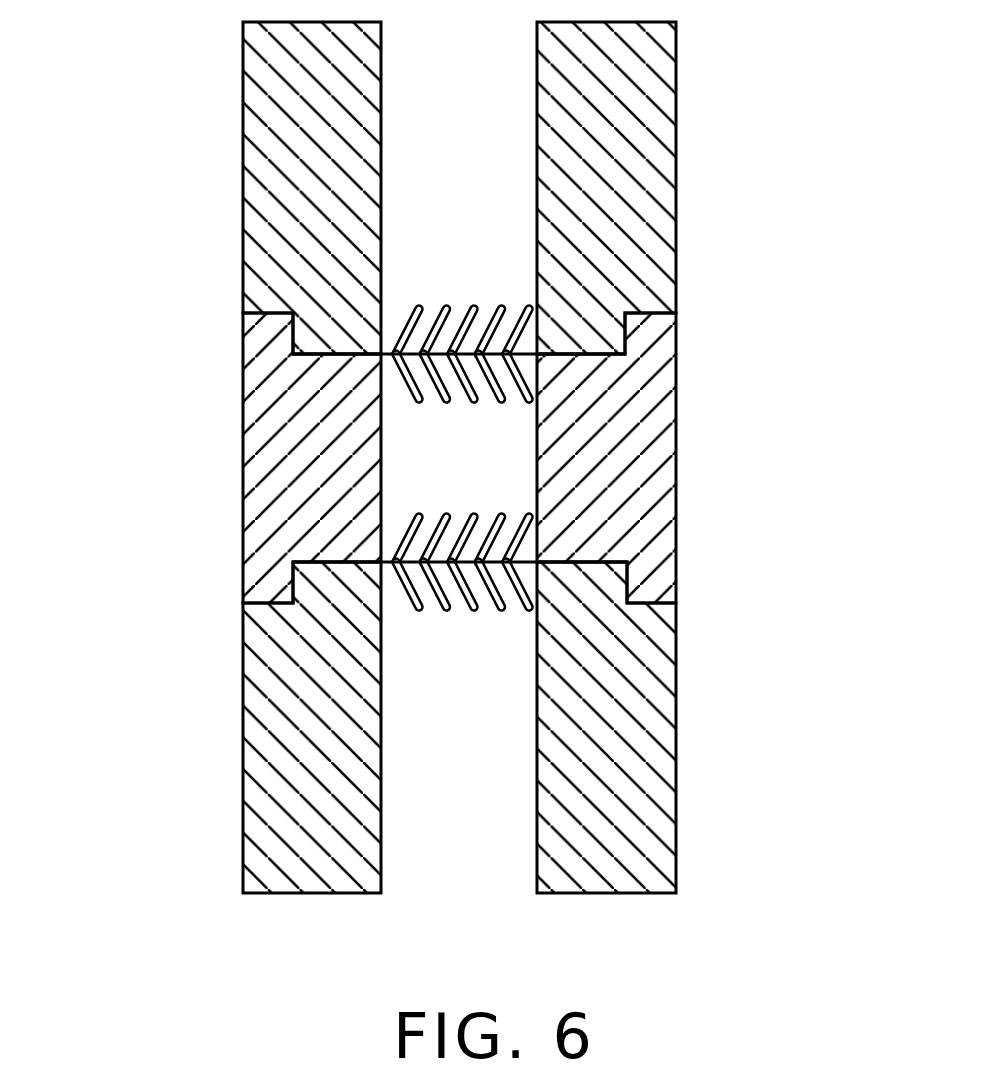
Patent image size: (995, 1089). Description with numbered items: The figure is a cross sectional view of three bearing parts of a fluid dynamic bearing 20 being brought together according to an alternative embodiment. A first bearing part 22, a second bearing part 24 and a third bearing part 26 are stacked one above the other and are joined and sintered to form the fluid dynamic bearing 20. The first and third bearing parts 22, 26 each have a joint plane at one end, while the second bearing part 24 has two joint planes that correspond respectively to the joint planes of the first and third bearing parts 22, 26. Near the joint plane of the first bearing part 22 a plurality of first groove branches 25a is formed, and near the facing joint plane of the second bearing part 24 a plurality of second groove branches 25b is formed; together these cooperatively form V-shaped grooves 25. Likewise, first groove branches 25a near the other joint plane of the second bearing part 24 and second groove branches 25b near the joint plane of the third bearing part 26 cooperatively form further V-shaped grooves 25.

The fluid dynamic bearing 20 is at (467, 457).
The first bearing part 22 is at (605, 173).
The second bearing part 24 is at (637, 475).
The third bearing part 26 is at (637, 765).
The V-shaped grooves 25 is at (268, 473).
The first groove branches 25a is at (405, 323).
The second groove branches 25b is at (405, 370).